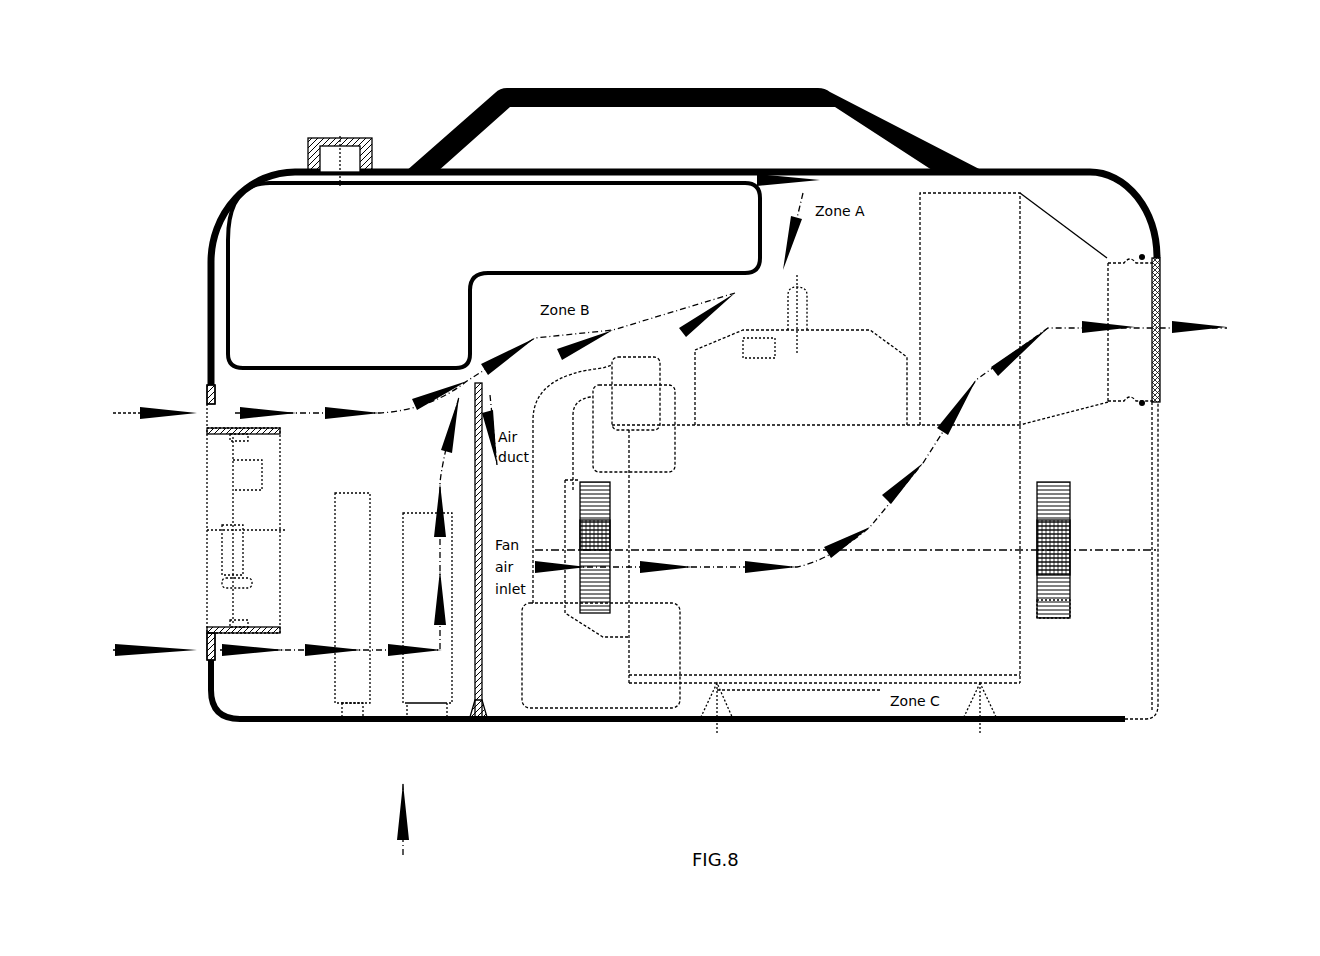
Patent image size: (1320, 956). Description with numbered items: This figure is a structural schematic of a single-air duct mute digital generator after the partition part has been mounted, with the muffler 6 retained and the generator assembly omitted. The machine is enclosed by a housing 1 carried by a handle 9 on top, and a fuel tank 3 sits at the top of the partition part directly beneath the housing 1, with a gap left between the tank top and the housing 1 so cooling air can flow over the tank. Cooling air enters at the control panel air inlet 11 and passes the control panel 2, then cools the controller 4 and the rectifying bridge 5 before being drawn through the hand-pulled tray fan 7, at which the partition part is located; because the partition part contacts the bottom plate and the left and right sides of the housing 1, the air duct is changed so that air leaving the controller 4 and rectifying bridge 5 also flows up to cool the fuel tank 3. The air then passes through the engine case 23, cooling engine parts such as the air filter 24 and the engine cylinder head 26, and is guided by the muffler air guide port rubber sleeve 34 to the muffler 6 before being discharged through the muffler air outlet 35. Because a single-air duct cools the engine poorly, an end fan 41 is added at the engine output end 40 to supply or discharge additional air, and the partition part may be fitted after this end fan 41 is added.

The housing 1 is at (225, 222).
The fuel tank 3 is at (225, 307).
The handle 9 is at (852, 102).
The control panel air inlet 11 is at (207, 408).
The control panel 2 is at (227, 522).
The controller 4 is at (348, 662).
The rectifying bridge 5 is at (425, 672).
The hand-pulled tray fan 7 is at (600, 590).
The air filter 24 is at (528, 685).
The engine cylinder head 26 is at (793, 372).
The muffler 6 is at (940, 320).
The engine case 23 is at (770, 625).
The muffler air guide port rubber sleeve 34 is at (1107, 258).
The muffler air outlet 35 is at (1157, 310).
The engine output end 40 is at (1020, 550).
The end fan 41 is at (1040, 598).